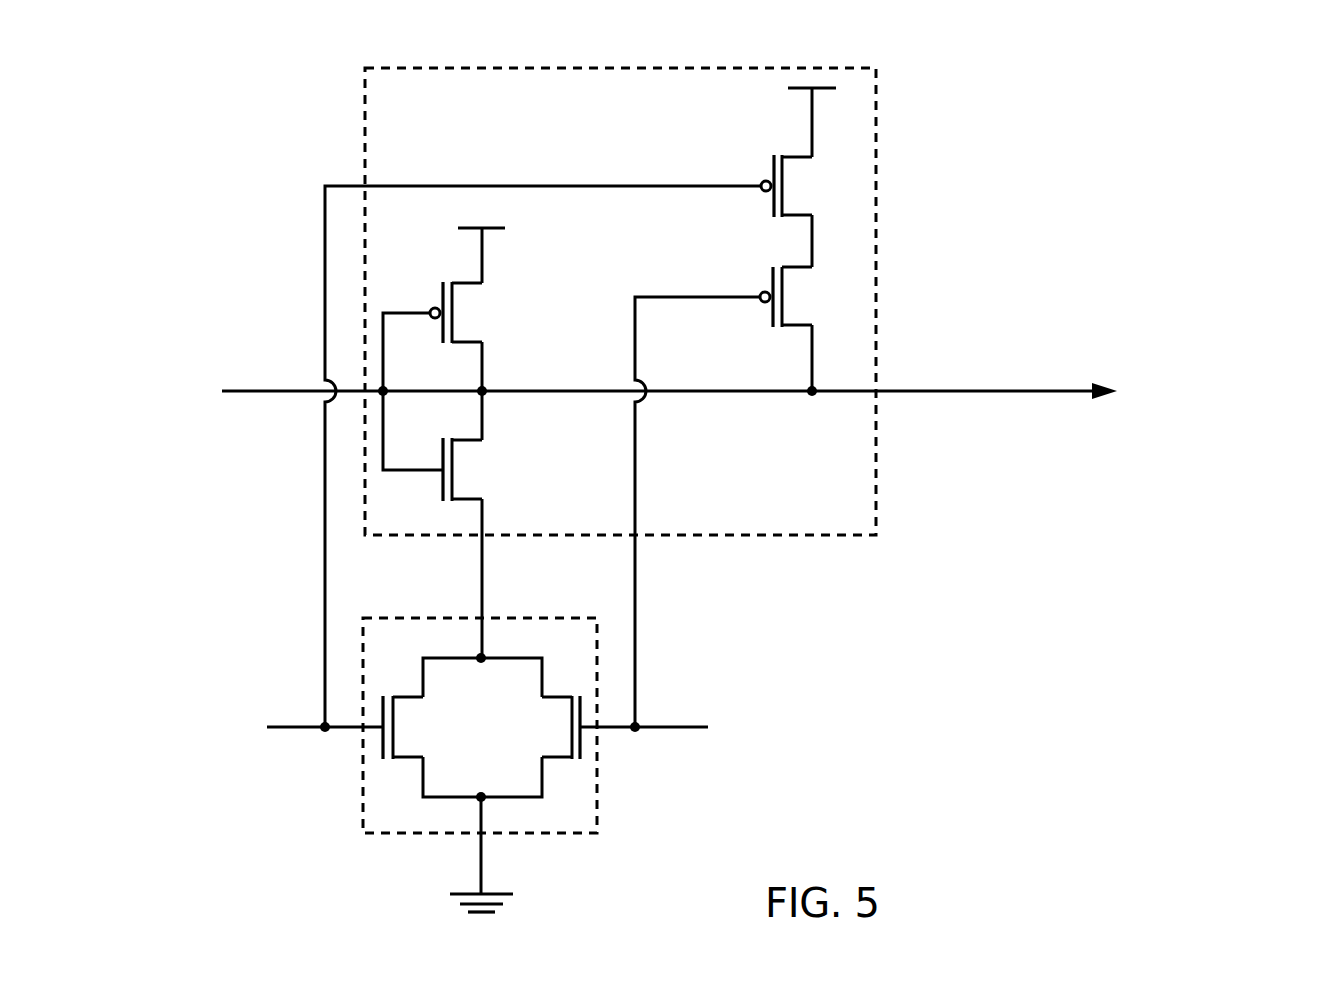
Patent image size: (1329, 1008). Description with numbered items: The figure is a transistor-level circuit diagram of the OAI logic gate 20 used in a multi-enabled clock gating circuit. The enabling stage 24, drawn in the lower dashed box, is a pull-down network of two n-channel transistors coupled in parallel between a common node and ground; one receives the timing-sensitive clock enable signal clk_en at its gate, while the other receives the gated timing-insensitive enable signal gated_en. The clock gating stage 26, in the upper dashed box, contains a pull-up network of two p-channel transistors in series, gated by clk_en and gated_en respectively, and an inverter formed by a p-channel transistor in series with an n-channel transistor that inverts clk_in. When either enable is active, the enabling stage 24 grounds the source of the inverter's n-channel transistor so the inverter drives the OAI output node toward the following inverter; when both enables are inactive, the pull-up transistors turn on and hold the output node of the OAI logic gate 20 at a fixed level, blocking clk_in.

The OAI logic gate 20 is at (721, 467).
The clock gating stage 26 is at (690, 68).
The enabling stage 24 is at (517, 617).